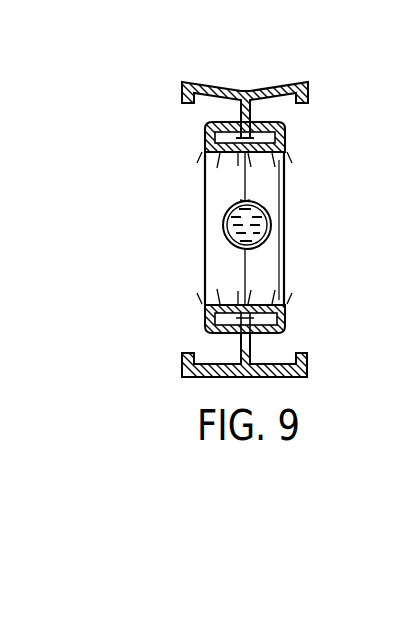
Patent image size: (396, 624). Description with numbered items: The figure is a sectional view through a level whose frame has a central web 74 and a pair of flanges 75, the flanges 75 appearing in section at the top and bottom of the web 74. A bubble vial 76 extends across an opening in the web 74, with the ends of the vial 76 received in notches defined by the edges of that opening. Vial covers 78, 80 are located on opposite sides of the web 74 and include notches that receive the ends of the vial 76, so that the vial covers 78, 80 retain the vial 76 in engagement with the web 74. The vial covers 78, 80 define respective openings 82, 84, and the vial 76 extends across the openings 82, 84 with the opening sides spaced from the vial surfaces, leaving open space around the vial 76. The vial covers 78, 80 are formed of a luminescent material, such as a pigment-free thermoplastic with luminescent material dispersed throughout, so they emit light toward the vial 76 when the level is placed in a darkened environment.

The web 74 is at (241, 110).
The flanges 75 is at (208, 82).
The bubble vial 76 is at (224, 212).
The vial cover 78 is at (288, 197).
The vial cover 80 is at (203, 186).
The opening 82 is at (274, 266).
The opening 84 is at (206, 268).